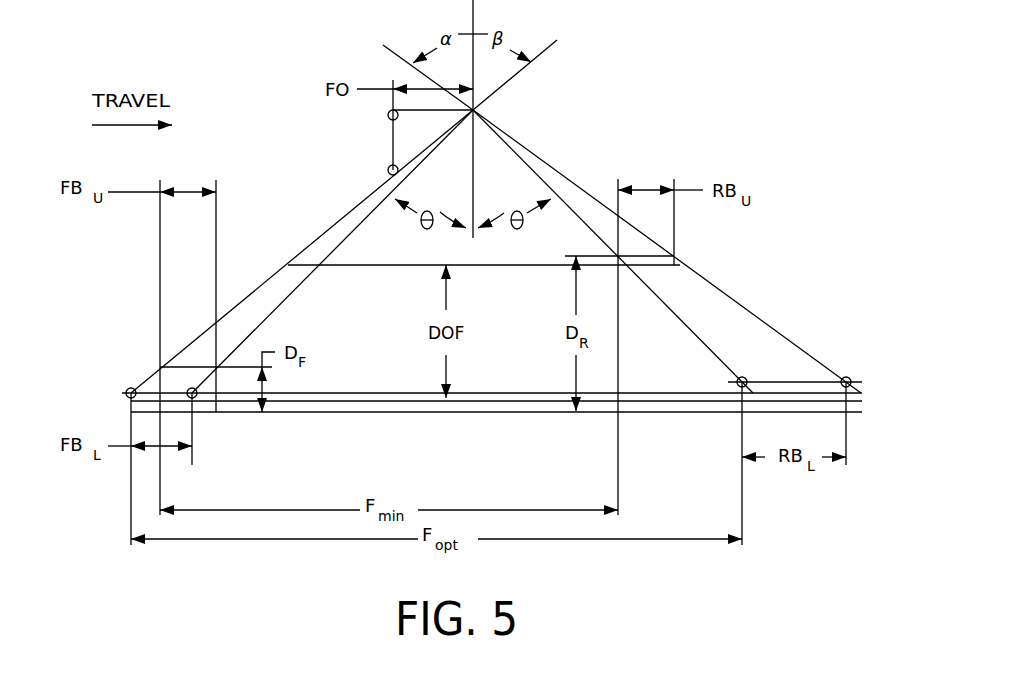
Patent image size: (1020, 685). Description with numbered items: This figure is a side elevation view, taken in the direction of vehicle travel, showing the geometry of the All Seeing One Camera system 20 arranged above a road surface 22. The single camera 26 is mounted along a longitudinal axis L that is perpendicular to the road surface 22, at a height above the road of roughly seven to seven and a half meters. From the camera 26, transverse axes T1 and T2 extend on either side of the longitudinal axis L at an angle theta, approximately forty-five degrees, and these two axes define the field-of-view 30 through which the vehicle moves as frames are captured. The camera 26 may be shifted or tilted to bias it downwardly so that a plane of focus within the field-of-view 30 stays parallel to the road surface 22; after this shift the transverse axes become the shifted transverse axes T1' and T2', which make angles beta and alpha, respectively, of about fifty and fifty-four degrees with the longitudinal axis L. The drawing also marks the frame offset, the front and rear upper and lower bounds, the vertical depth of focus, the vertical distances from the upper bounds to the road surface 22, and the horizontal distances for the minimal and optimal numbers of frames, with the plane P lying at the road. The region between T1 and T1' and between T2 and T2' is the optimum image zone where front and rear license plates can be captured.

The All Seeing One Camera (ASOC) system 20 is at (283, 100).
The road surface 22 is at (366, 412).
The camera 26 is at (474, 110).
The field-of-view 30 is at (398, 238).
The longitudinal axis L is at (474, 83).
The part P is at (413, 398).
The transverse axis T1 is at (332, 251).
The transverse axis T2 is at (613, 251).
The shifted transverse axis T1' is at (146, 313).
The shifted transverse axis T2' is at (767, 275).